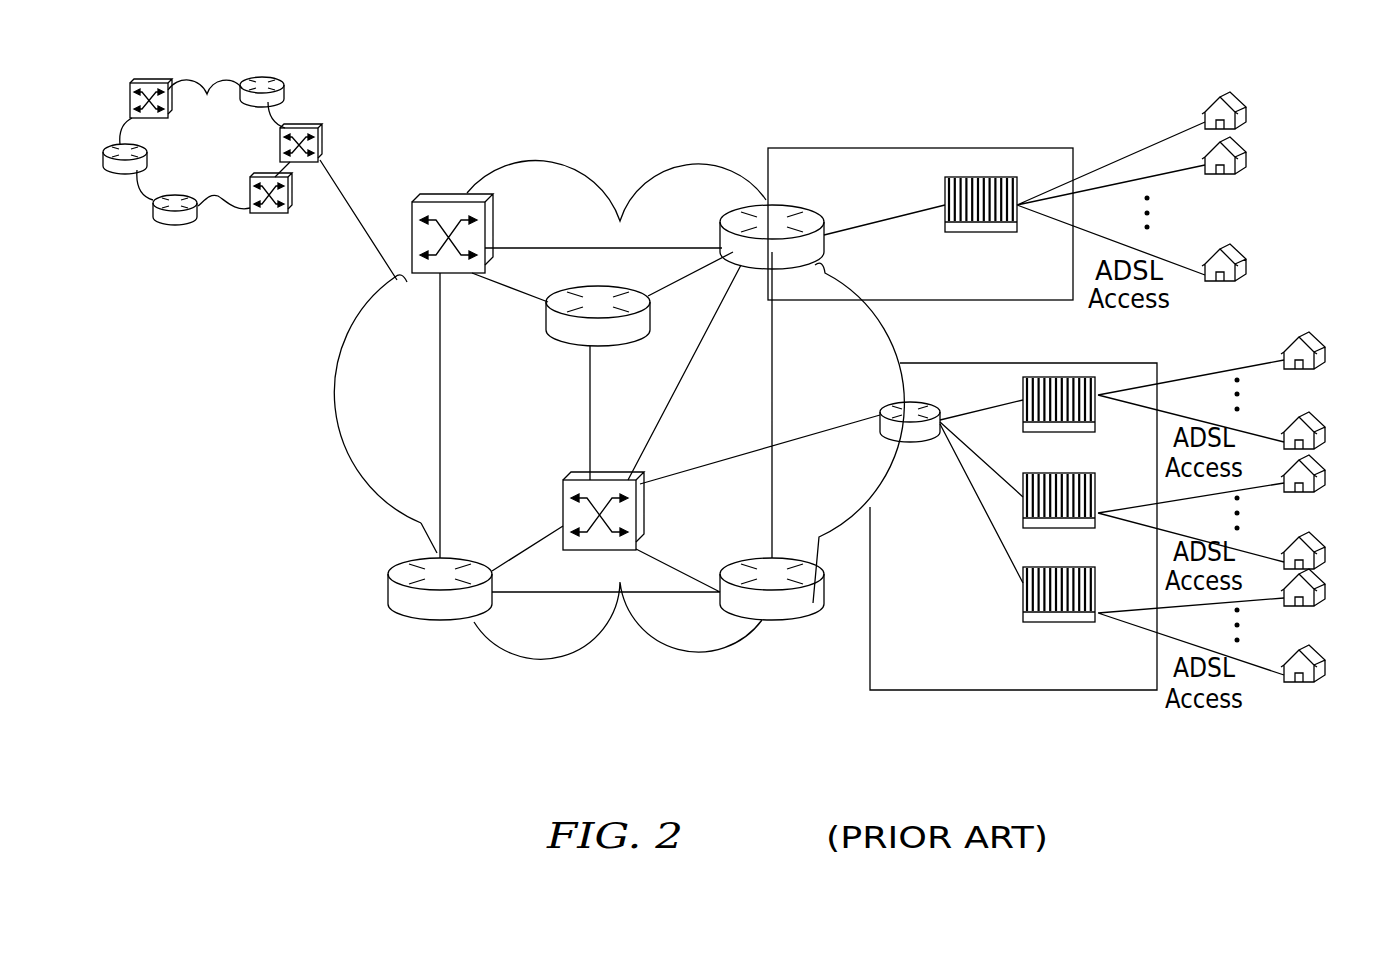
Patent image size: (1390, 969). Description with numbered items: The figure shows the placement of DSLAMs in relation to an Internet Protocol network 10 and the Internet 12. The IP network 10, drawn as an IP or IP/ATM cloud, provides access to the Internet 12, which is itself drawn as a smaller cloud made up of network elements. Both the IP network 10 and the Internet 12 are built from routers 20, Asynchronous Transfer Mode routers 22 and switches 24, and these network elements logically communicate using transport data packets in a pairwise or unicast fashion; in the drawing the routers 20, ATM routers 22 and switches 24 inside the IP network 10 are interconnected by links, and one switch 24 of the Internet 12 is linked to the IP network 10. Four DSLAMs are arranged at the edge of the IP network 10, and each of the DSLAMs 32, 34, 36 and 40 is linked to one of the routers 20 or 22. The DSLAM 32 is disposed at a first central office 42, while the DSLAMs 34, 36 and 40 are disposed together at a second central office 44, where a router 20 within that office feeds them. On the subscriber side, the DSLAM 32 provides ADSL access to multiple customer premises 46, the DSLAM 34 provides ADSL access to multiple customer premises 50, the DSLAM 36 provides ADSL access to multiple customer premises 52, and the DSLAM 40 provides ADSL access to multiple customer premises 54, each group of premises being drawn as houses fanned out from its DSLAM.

The IP network 10 is at (668, 165).
The Internet 12 is at (222, 80).
The router 20 is at (275, 78).
The Asynchronous Transfer Mode (ATM) router 22 is at (650, 288).
The switch 24 is at (130, 95).
The DSLAM 32 is at (945, 190).
The DSLAM 34 is at (1023, 392).
The DSLAM 36 is at (1098, 483).
The DSLAM 40 is at (1023, 600).
The central office 42 is at (858, 148).
The central office 44 is at (990, 363).
The customer premises 46 is at (1245, 102).
The customer premises 50 is at (1325, 340).
The customer premises 52 is at (1325, 465).
The customer premises 54 is at (1325, 578).